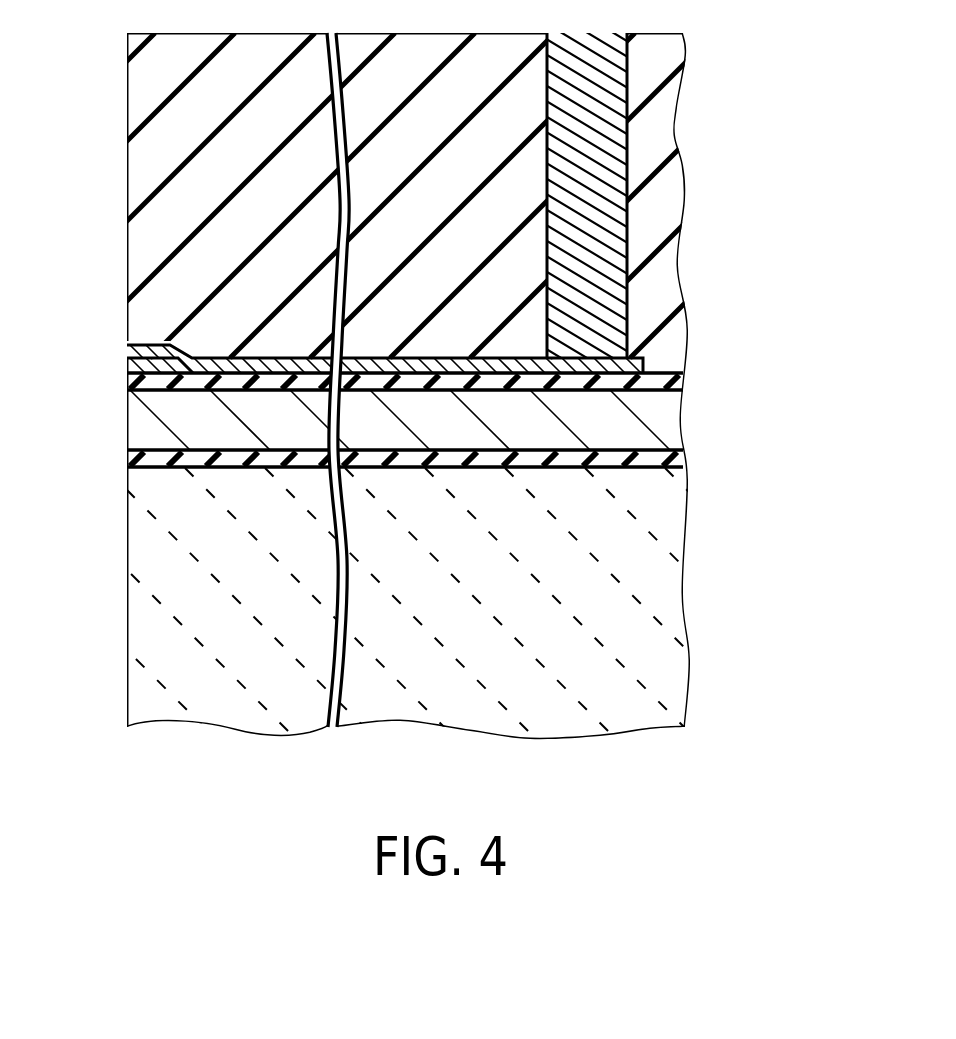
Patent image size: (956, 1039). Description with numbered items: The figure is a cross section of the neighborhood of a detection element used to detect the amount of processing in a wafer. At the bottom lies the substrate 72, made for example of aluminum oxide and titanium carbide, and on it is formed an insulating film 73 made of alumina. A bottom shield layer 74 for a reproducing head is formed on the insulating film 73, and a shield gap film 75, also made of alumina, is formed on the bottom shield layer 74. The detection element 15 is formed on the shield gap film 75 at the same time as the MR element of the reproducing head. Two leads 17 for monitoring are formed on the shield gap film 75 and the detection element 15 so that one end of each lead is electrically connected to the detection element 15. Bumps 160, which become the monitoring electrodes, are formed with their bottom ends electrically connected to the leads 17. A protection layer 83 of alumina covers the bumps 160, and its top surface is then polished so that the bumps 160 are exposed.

The protection layer 83 is at (158, 73).
The bumps 160 is at (618, 170).
The leads 17 is at (146, 345).
The detection element 15 is at (133, 347).
The shield gap film 75 is at (128, 381).
The bottom shield layer 74 is at (128, 428).
The insulating film 73 is at (128, 460).
The substrate 72 is at (138, 622).